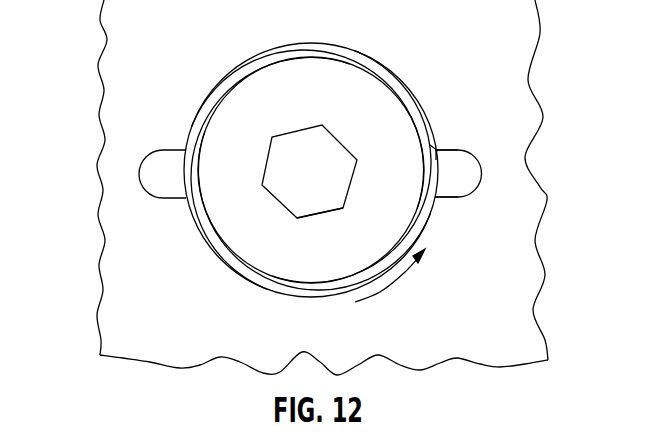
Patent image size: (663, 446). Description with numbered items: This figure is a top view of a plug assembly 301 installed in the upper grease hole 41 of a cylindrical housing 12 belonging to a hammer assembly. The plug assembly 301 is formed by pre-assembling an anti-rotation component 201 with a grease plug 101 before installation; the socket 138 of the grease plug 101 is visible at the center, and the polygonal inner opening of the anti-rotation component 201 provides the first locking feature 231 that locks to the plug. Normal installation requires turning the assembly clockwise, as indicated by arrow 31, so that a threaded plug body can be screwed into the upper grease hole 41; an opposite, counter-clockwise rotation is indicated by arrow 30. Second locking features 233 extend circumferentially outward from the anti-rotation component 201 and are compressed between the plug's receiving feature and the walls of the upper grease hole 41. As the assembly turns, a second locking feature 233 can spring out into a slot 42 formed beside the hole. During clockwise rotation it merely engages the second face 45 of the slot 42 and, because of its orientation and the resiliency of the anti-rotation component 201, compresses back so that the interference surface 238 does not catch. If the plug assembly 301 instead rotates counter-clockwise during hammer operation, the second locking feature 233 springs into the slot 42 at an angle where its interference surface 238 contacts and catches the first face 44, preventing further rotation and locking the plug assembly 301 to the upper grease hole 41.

The cylindrical housing 12 is at (120, 290).
The first rotation direction 30 is at (387, 288).
The arrow 31 is at (188, 236).
The upper grease hole 41 is at (250, 288).
The slot 42 is at (158, 188).
The first face 44 is at (453, 147).
The second face 45 is at (440, 198).
The grease plug 101 is at (205, 112).
The socket 138 is at (300, 128).
The anti-rotation component 201 is at (368, 56).
The first locking feature 231 is at (318, 214).
The second locking feature 233 is at (438, 151).
The interference surface 238 is at (437, 147).
The plug assembly 301 is at (215, 55).